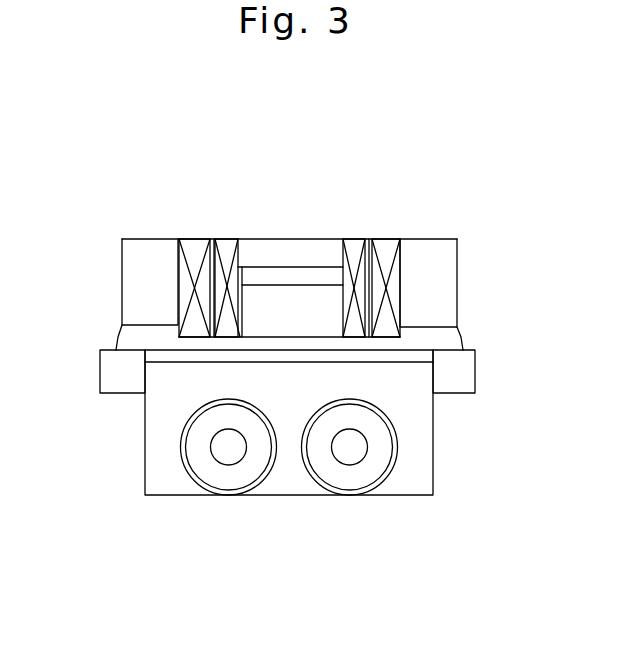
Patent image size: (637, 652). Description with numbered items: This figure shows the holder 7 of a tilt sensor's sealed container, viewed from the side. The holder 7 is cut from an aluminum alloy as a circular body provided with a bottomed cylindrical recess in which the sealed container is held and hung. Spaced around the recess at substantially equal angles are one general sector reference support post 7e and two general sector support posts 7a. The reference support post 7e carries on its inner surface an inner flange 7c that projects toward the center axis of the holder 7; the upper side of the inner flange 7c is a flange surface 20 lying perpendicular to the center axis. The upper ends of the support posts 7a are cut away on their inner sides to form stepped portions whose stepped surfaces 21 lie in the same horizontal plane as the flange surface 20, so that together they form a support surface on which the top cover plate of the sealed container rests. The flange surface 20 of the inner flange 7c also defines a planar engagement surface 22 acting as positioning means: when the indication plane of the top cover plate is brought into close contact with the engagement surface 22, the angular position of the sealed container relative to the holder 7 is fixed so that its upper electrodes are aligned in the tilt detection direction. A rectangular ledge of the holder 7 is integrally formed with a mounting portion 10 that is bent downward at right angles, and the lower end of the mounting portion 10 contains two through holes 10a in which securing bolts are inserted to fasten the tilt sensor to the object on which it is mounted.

The holder 7 is at (477, 368).
The support posts 7a is at (122, 282).
The inner flange 7c is at (318, 275).
The reference support post 7e is at (247, 238).
The mounting portion 10 is at (320, 422).
The through holes 10a is at (232, 464).
The flange surface 20 is at (280, 265).
The stepped surfaces 21 is at (210, 238).
The engagement surface 22 is at (300, 247).